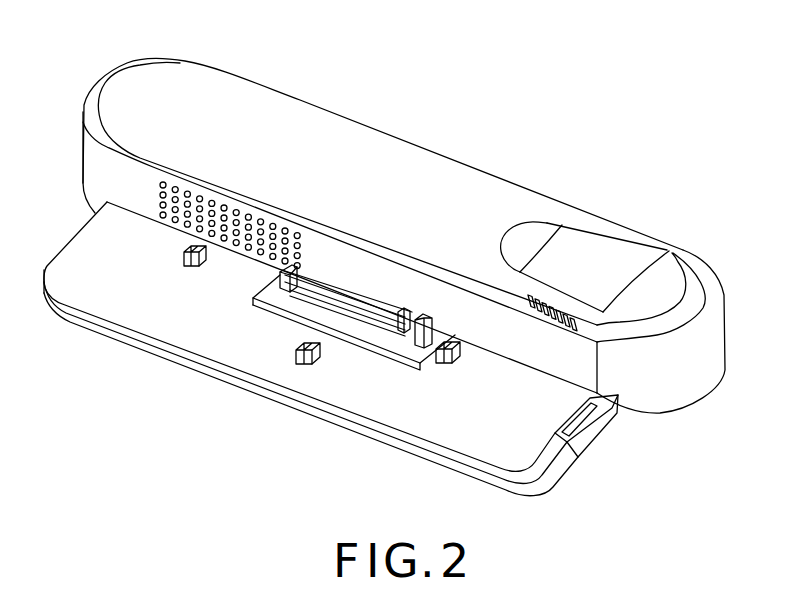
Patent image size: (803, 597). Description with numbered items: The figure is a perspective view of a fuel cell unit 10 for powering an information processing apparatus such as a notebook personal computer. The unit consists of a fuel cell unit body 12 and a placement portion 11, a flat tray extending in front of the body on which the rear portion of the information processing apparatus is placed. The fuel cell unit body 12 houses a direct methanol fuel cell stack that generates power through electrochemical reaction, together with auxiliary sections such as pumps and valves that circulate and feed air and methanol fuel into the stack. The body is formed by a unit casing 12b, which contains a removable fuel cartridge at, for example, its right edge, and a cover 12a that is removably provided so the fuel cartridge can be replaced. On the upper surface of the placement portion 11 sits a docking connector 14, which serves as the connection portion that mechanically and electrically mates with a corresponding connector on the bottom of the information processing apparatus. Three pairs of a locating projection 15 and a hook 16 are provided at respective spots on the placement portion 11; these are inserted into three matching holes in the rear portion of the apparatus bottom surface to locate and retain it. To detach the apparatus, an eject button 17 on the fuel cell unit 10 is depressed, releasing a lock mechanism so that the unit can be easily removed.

The fuel cell unit 10 is at (401, 97).
The placement portion 11 is at (99, 339).
The fuel cell unit body 12 is at (461, 162).
The cover 12a is at (692, 272).
The unit casing 12b is at (184, 60).
The docking connector 14 is at (306, 290).
The locating projection 15 is at (198, 268).
The hook 16 is at (186, 268).
The eject button 17 is at (600, 432).